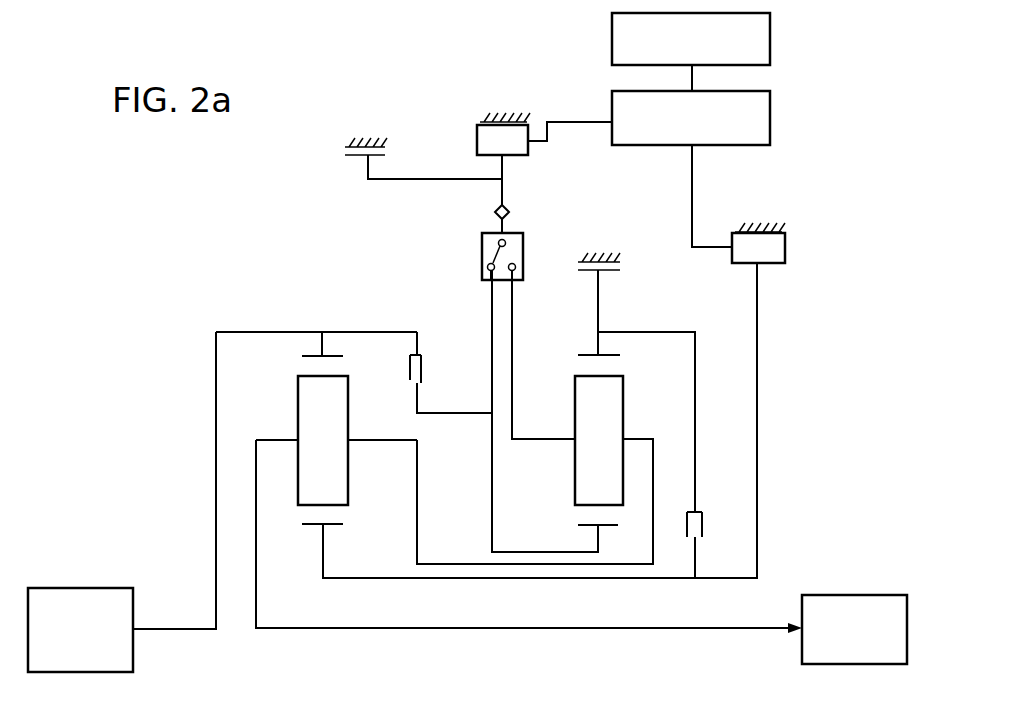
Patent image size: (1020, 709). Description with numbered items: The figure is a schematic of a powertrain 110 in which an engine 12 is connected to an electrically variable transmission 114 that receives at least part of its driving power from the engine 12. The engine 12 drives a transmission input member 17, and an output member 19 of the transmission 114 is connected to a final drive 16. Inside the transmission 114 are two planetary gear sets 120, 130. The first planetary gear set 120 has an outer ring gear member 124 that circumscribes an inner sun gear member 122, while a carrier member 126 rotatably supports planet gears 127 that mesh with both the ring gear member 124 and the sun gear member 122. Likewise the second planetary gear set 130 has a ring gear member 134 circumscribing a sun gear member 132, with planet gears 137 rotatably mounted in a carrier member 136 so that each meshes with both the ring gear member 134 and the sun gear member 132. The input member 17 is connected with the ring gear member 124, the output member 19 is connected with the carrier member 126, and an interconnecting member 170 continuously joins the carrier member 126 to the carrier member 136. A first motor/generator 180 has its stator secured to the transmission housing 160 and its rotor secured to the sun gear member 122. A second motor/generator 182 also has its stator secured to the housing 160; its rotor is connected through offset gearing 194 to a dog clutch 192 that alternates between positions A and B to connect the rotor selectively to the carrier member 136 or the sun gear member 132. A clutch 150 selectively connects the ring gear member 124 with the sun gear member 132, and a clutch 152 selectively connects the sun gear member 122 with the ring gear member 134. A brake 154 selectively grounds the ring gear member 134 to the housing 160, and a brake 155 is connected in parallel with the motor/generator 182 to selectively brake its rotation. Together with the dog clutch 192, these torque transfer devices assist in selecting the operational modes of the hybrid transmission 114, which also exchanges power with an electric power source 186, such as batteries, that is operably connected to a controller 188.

The engine 12 is at (94, 562).
The final drive 16 is at (843, 572).
The transmission input member 17 is at (172, 631).
The transmission output member 19 is at (757, 631).
The powertrain 110 is at (124, 378).
The electrically variable transmission 114 is at (334, 262).
The first planetary gear set 120 is at (307, 535).
The sun gear member of the first planetary gear set 122 is at (335, 525).
The ring gear member of the first planetary gear set 124 is at (313, 352).
The carrier member of the first planetary gear set 126 is at (307, 442).
The planet gears of the first planetary gear set 127 is at (323, 440).
The second planetary gear set 130 is at (585, 535).
The sun gear member of the second planetary gear set 132 is at (608, 526).
The ring gear member of the second planetary gear set 134 is at (592, 352).
The carrier member of the second planetary gear set 136 is at (578, 468).
The planet gears of the second planetary gear set 137 is at (599, 440).
The first clutch 150 is at (435, 392).
The second clutch 152 is at (710, 535).
The third brake 154 is at (632, 258).
The fourth brake 155 is at (330, 144).
The transmission housing 160 is at (483, 118).
The interconnecting member 170 is at (445, 562).
The first motor/generator 180 is at (800, 228).
The second motor/generator 182 is at (452, 118).
The electric power source 186 is at (770, 42).
The controller 188 is at (770, 120).
The dog clutch 192 is at (482, 262).
The offset gearing 194 is at (482, 212).